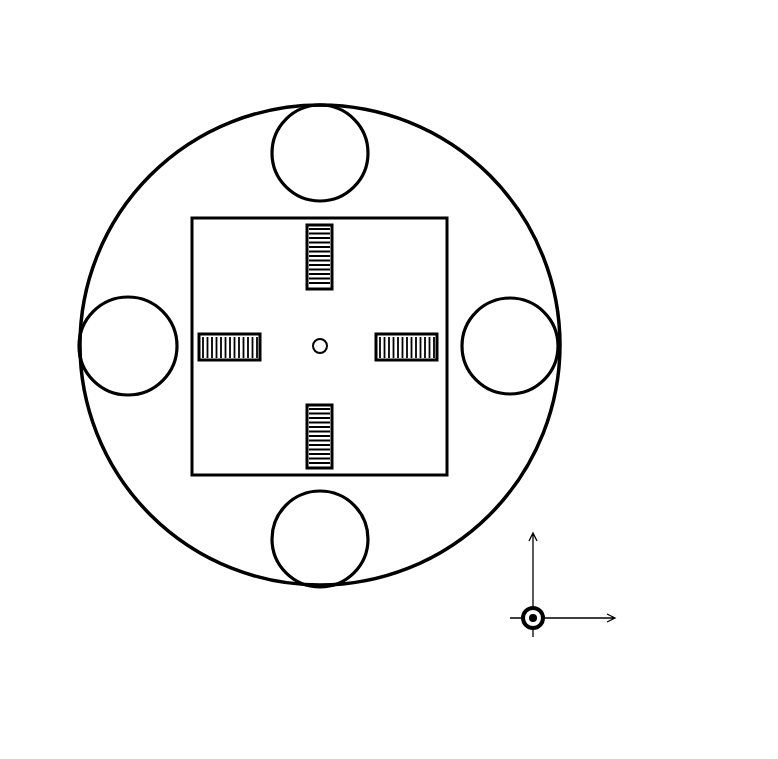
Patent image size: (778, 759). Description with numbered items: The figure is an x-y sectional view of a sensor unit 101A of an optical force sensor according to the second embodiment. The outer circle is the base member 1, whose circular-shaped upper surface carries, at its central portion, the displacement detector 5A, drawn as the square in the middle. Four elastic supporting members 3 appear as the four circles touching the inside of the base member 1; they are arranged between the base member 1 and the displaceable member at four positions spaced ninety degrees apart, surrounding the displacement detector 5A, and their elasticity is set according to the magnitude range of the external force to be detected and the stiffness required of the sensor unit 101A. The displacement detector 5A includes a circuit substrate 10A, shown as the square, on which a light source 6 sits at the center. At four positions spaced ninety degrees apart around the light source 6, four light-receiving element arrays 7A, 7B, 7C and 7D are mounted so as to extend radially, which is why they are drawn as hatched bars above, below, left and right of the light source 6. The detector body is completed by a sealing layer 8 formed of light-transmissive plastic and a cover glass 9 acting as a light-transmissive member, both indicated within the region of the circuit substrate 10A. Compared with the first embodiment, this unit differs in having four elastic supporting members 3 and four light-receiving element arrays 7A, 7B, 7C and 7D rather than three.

The sensor unit 101A is at (580, 128).
The base member 1 is at (123, 207).
The elastic supporting member 3 is at (362, 128).
The displacement detector 5A is at (177, 403).
The circuit substrate 10A is at (192, 447).
The light source 6 is at (316, 354).
The light-receiving element array 7A is at (335, 253).
The light-receiving element array 7B is at (300, 447).
The light-receiving element array 7C is at (228, 333).
The light-receiving element array 7D is at (402, 333).
The sealing layer 8 is at (461, 530).
The cover glass 9 is at (417, 457).